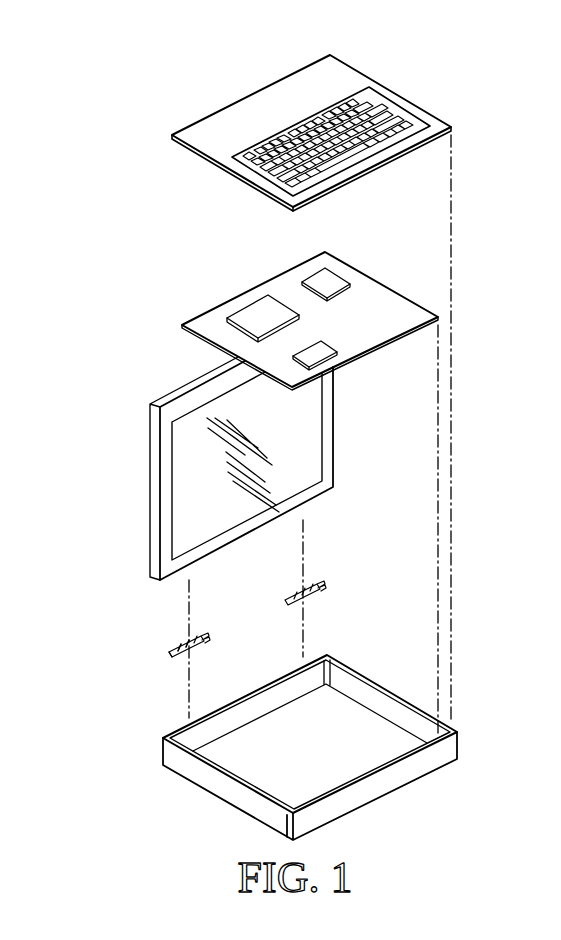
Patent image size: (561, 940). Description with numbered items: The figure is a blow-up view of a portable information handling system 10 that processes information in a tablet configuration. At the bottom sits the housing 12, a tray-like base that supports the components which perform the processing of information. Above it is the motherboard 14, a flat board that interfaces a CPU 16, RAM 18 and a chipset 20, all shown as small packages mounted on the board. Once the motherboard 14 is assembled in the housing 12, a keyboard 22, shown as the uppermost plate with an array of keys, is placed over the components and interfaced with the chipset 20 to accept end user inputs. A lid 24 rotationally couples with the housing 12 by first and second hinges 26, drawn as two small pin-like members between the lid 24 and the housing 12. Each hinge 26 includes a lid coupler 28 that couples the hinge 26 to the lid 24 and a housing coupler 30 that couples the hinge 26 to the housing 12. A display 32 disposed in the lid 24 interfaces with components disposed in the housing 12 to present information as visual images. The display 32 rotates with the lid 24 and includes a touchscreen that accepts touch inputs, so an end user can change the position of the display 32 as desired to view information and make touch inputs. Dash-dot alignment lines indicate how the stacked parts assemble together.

The portable information handling system 10 is at (108, 118).
The housing 12 is at (202, 778).
The motherboard 14 is at (207, 318).
The CPU 16 is at (258, 310).
The RAM 18 is at (325, 337).
The chipset 20 is at (328, 280).
The keyboard 22 is at (352, 92).
The lid 24 is at (240, 468).
The hinge 26 is at (226, 639).
The lid coupler 28 is at (180, 648).
The housing coupler 30 is at (173, 660).
The display 32 is at (303, 450).